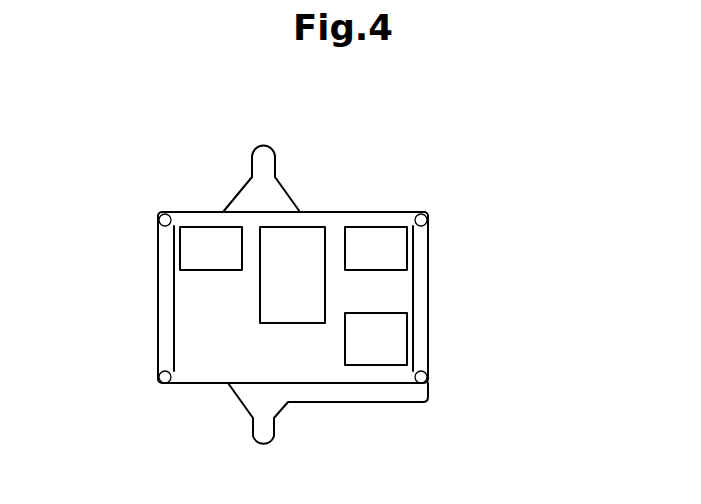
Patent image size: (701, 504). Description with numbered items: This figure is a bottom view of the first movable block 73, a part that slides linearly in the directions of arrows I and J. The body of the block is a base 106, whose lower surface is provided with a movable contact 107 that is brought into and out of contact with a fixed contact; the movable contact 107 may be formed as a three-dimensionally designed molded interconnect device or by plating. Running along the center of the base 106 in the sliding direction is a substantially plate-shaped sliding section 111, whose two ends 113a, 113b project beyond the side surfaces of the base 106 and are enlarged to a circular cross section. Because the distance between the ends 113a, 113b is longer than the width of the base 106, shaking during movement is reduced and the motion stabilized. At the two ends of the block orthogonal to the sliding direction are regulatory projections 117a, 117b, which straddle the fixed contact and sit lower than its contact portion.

The first movable block 73 is at (310, 269).
The base 106 is at (400, 210).
The movable contact 107 is at (202, 238).
The sliding section 111 is at (268, 117).
The end of sliding section 113a is at (278, 443).
The end of sliding section 113b is at (239, 148).
The regulatory projection 117a is at (160, 355).
The regulatory projection 117b is at (428, 358).